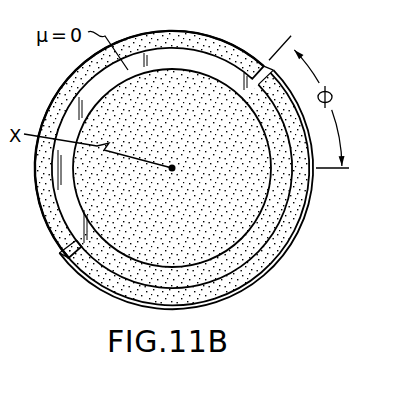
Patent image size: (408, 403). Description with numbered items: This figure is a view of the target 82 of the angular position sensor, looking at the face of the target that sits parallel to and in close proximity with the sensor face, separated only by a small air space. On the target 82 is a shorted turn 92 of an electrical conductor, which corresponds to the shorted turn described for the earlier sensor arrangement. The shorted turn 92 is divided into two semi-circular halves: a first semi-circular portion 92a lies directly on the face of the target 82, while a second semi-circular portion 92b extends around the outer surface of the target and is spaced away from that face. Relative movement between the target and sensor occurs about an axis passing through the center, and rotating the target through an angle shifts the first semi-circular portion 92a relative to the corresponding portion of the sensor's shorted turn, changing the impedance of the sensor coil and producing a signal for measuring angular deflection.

The target 82 is at (254, 265).
The shorted turn 92 is at (202, 56).
The first semi-circular portion 92a is at (231, 38).
The second semi-circular portion 92b is at (226, 296).